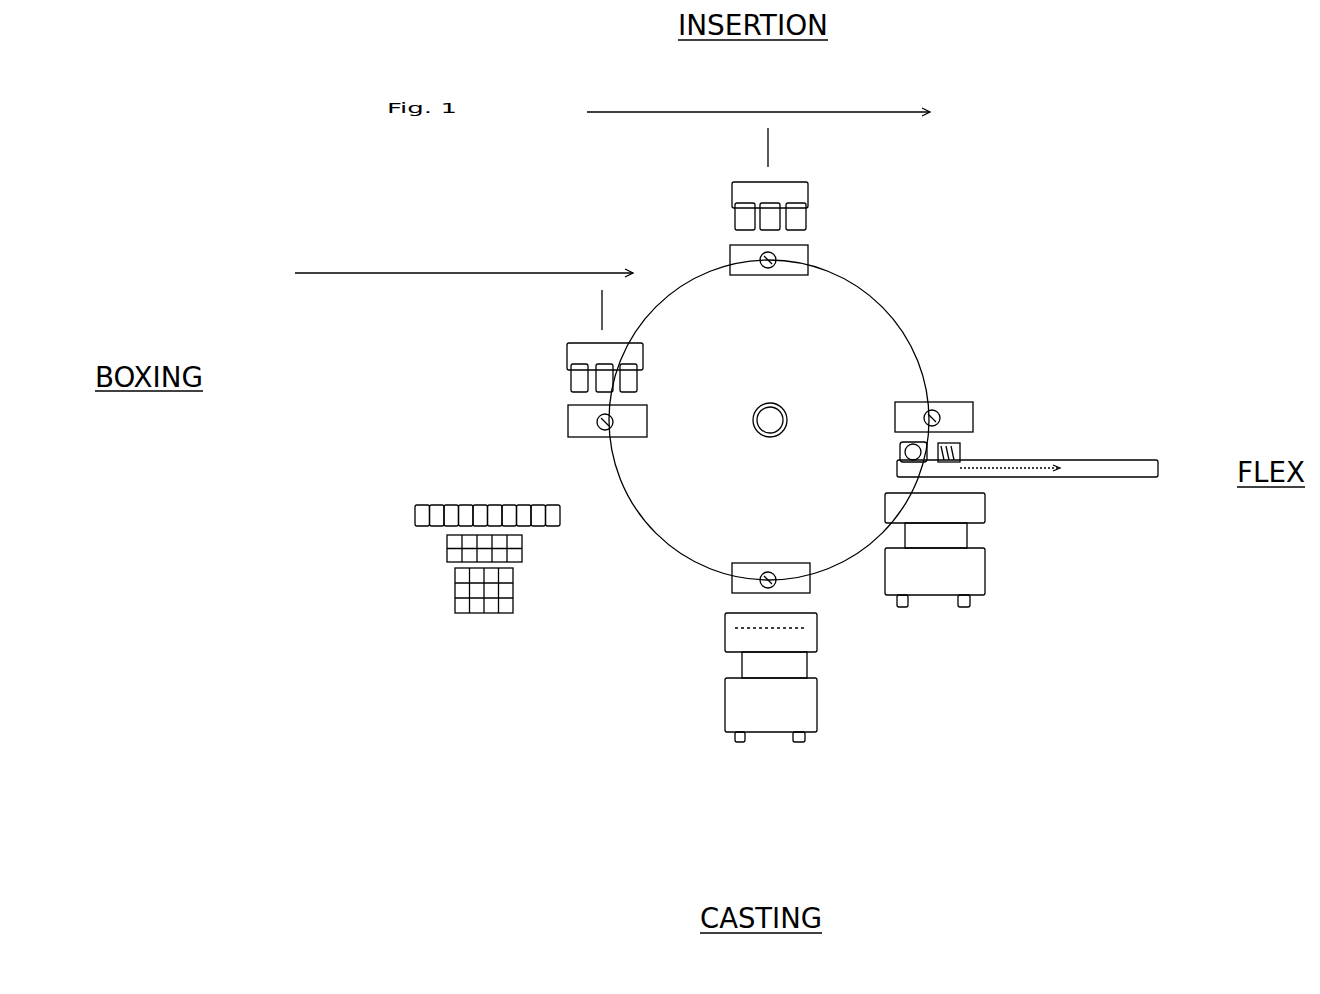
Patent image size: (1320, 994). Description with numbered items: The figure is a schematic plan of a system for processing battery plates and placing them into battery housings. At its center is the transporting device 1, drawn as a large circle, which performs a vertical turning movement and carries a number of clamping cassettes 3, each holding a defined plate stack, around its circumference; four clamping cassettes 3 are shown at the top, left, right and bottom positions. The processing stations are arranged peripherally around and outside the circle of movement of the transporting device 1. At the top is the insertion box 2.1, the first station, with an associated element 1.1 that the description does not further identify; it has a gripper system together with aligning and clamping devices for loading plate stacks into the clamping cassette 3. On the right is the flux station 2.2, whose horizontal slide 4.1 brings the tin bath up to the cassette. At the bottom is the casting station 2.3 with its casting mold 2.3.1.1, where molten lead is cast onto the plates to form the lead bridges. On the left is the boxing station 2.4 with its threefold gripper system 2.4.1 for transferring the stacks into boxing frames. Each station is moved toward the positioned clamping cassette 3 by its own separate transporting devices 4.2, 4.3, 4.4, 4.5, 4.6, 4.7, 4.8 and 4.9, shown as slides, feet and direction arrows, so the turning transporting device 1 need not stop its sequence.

The transporting device 1 is at (905, 330).
The insertion station holder 1.1 is at (800, 193).
The insertion box 2.1 is at (813, 222).
The flux station 2.2 is at (968, 450).
The casting station 2.3 is at (808, 660).
The casting mold 2.3.1.1 is at (760, 628).
The boxing station 2.4 is at (560, 400).
The threefold gripper system 2.4.1 is at (577, 352).
The clamping cassette 3 is at (810, 258).
The horizontal slide 4.1 is at (1007, 470).
The separate transporting device 4.2 is at (968, 605).
The separate transporting device 4.3 is at (968, 533).
The separate transporting device 4.4 is at (807, 737).
The separate transporting device 4.5 is at (740, 665).
The separate transporting device 4.6 is at (430, 273).
The separate transporting device 4.7 is at (602, 298).
The separate transporting device 4.8 is at (770, 143).
The separate transporting device 4.9 is at (843, 110).